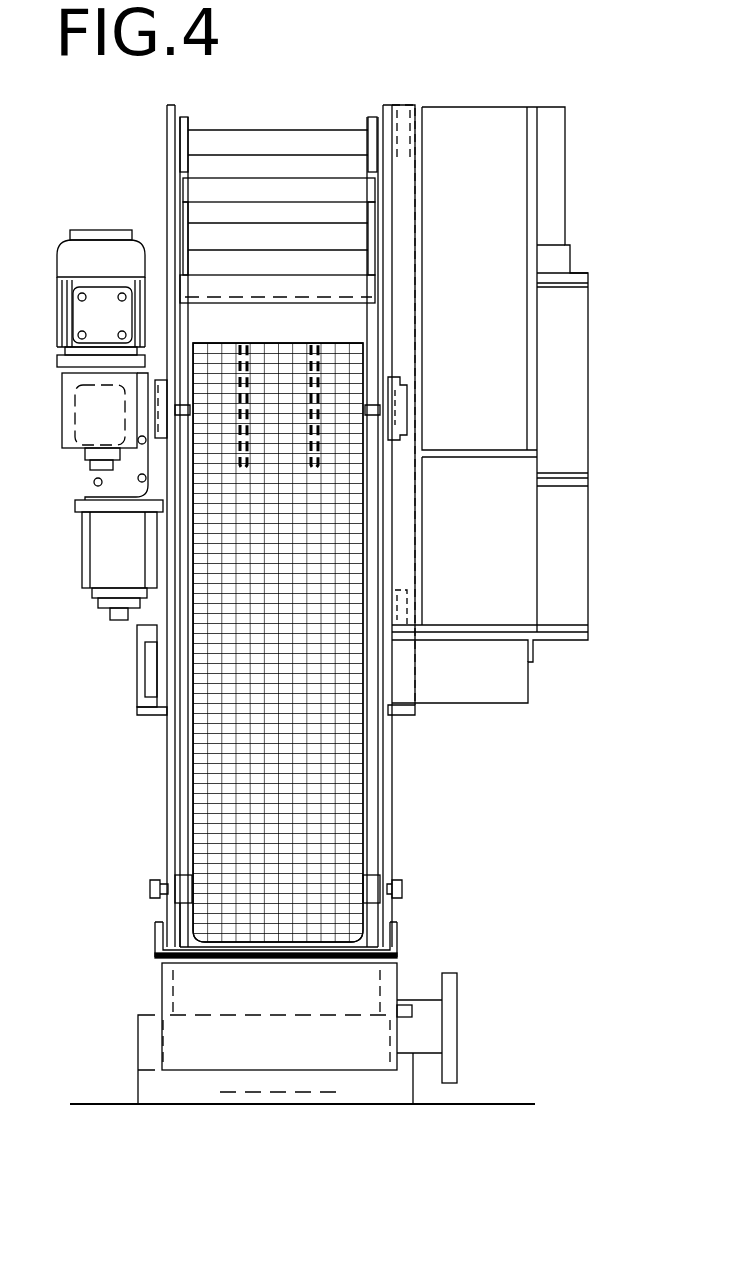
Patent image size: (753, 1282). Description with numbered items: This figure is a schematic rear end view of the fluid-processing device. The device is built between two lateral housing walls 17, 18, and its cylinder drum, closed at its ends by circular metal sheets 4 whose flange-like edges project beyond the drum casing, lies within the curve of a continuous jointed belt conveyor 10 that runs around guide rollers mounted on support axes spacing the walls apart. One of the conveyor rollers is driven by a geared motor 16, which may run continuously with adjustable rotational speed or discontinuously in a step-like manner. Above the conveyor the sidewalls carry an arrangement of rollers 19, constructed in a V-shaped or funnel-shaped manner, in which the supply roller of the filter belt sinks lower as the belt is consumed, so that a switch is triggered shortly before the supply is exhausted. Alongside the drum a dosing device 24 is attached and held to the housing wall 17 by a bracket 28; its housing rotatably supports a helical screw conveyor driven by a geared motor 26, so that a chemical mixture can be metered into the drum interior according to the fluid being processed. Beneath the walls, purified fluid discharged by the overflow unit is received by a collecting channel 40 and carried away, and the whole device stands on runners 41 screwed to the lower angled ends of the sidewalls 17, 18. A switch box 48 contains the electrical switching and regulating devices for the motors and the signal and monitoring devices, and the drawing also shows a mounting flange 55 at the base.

The circular metal sheets 4 is at (182, 742).
The continuous jointed belt conveyor 10 is at (330, 818).
The geared motor 16 is at (85, 258).
The lateral housing wall 17 is at (388, 763).
The lateral housing wall 18 is at (167, 785).
The arrangement of rollers 19 is at (275, 178).
The dosing device 24 is at (572, 570).
The geared motor 26 is at (85, 493).
The bracket 28 is at (150, 678).
The collecting channel 40 is at (312, 1005).
The runners 41 is at (158, 1090).
The switch box 48 is at (503, 251).
The mounting flange 55 is at (458, 1005).